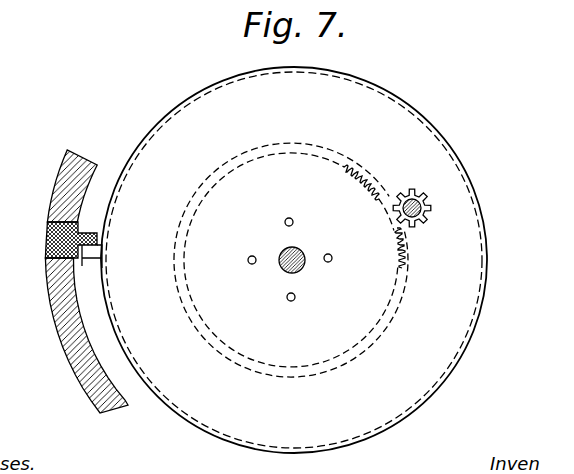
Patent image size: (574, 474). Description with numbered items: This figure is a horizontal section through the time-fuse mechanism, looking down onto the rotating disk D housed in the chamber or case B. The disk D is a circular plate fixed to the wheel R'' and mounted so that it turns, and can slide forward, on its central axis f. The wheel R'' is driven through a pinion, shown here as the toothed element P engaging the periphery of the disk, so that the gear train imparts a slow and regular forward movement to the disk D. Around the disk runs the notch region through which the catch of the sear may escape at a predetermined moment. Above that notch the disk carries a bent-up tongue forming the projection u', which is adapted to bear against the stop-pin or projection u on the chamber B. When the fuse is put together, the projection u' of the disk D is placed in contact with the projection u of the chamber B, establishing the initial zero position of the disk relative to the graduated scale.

The disk D is at (340, 122).
The axis f is at (304, 252).
The wheel R'' is at (290, 246).
The weight P is at (429, 209).
The chamber B is at (62, 342).
The stop-pin u is at (71, 229).
The projection u' is at (107, 251).